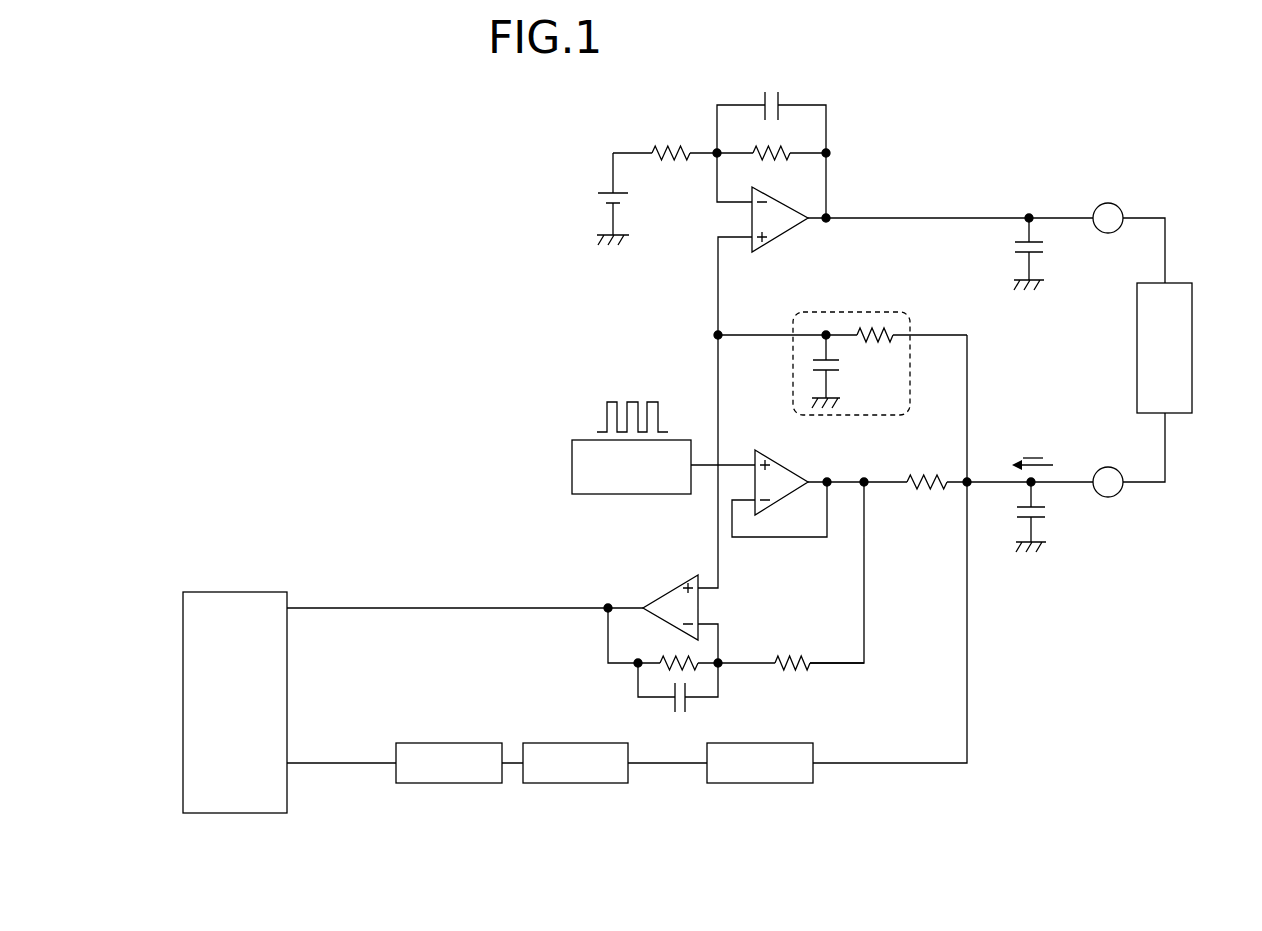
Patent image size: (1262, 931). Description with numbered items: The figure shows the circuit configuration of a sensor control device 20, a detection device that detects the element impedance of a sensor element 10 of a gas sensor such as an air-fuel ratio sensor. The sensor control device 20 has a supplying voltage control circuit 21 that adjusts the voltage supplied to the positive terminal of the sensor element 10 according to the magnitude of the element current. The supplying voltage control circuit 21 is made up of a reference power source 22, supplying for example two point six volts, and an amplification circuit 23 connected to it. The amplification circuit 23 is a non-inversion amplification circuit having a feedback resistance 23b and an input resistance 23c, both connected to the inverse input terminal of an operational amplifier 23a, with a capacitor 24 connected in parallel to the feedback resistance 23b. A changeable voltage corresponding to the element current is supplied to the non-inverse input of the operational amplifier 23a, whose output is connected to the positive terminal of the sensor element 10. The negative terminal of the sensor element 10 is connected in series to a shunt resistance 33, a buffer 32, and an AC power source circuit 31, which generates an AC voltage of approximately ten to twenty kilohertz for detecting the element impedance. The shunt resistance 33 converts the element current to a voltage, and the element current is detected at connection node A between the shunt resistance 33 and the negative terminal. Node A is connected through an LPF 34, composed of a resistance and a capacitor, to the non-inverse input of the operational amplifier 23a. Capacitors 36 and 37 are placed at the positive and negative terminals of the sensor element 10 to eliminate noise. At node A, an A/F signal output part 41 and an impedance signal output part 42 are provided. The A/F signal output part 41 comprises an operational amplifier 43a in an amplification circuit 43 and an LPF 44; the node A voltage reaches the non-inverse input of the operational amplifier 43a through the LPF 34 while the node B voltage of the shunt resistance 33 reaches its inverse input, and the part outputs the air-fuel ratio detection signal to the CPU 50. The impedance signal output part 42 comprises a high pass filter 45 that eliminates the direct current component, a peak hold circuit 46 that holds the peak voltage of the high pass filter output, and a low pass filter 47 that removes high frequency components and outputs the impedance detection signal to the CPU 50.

The sensor element 10 is at (1192, 318).
The sensor control device 20 is at (1158, 152).
The supplying voltage control circuit 21 is at (748, 69).
The reference power source 22 is at (622, 190).
The amplification circuit 23 is at (688, 139).
The operational amplifier 23a is at (782, 240).
The feedback resistance 23b is at (782, 163).
The input resistance 23c is at (680, 163).
The capacitor 24 is at (787, 100).
The AC power source circuit 31 is at (585, 440).
The buffer 32 is at (770, 456).
The shunt resistance 33 is at (936, 476).
The LPF 34 is at (793, 367).
The capacitor 36 is at (1040, 240).
The capacitor 37 is at (1040, 505).
The A/F signal output part 41 is at (601, 582).
The impedance signal output part 42 is at (486, 816).
The amplification circuit 43 is at (692, 545).
The operational amplifier 43a is at (695, 577).
The LPF 44 is at (722, 693).
The high pass filter 45 is at (745, 783).
The peak hold circuit 46 is at (590, 783).
The low pass filter 47 is at (478, 783).
The CPU 50 is at (266, 592).